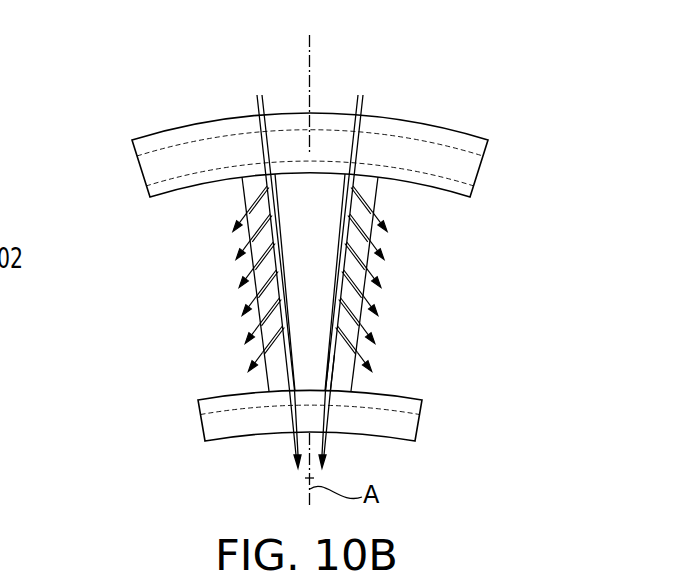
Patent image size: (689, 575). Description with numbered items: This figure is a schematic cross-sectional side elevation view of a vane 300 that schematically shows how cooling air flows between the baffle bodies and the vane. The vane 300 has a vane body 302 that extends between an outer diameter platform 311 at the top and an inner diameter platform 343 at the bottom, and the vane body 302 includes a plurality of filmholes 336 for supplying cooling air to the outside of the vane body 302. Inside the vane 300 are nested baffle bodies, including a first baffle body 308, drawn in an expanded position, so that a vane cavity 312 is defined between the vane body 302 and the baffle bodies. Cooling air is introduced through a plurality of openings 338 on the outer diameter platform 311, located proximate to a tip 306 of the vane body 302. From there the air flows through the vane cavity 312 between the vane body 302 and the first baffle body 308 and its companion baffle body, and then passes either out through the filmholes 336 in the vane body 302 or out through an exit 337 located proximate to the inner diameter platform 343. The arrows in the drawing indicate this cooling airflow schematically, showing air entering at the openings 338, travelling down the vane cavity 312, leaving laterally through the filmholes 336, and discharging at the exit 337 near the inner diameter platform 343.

The vane 300 is at (130, 110).
The outer diameter platform 311 is at (212, 120).
The inner diameter platform 343 is at (225, 424).
The tip 306 is at (245, 190).
The vane cavity 312 is at (356, 188).
The vane body 302 is at (377, 210).
The openings 338 is at (258, 108).
The first baffle body 308 is at (333, 383).
The exit 337 is at (290, 427).
The filmholes 336 is at (257, 267).